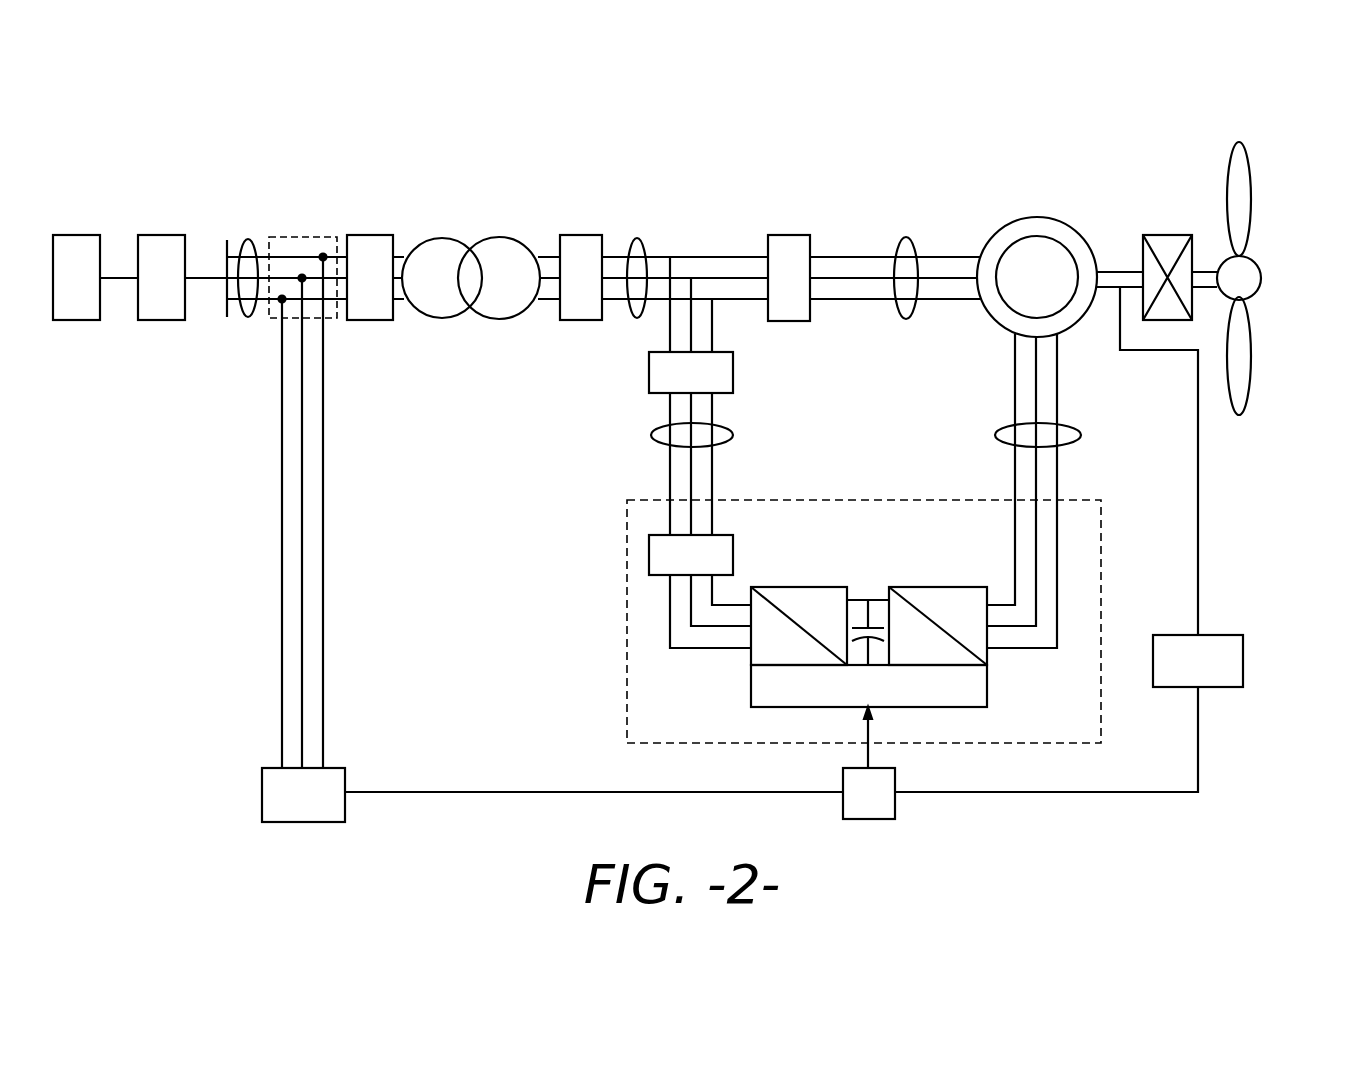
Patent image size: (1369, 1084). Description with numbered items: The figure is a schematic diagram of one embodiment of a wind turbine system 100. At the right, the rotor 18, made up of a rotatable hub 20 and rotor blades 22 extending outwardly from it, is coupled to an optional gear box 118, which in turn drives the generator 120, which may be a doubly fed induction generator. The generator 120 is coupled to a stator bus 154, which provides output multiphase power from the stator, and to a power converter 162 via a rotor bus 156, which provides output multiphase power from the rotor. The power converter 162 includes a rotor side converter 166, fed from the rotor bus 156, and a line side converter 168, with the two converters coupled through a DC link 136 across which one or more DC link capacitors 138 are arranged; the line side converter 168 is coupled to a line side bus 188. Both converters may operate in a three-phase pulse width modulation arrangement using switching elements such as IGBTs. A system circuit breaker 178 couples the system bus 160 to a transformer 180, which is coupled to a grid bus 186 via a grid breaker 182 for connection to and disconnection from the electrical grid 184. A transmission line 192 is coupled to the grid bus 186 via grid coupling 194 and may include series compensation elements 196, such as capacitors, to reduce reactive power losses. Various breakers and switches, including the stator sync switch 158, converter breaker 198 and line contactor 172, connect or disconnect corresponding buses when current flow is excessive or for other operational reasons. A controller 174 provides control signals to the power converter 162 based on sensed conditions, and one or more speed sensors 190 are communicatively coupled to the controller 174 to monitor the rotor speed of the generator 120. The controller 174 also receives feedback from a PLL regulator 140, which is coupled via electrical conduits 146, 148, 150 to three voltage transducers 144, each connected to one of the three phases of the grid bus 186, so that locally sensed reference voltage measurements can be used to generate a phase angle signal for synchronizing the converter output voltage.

The rotor 18 is at (1280, 172).
The hub 20 is at (1262, 276).
The rotor blade 22 is at (1250, 213).
The wind turbine system 100 is at (428, 158).
The gear box 118 is at (1170, 235).
The generator 120 is at (1035, 217).
The DC link 136 is at (877, 598).
The DC link capacitor 138 is at (855, 625).
The PLL regulator 140 is at (283, 807).
The voltage transducer 144 is at (312, 237).
The electrical conduit 146 is at (282, 590).
The electrical conduit 148 is at (303, 543).
The electrical conduit 150 is at (325, 497).
The stator bus 154 is at (906, 238).
The rotor bus 156 is at (1080, 435).
The stator sync switch 158 is at (788, 235).
The system bus 160 is at (640, 240).
The power converter 162 is at (1101, 592).
The rotor side converter 166 is at (990, 655).
The line side converter 168 is at (751, 657).
The line contactor 172 is at (649, 558).
The controller 174 is at (895, 805).
The system circuit breaker 178 is at (580, 235).
The transformer 180 is at (497, 238).
The grid breaker 182 is at (366, 235).
The electrical grid 184 is at (76, 235).
The grid bus 186 is at (248, 240).
The line side bus 188 is at (652, 443).
The speed sensor 190 is at (1178, 675).
The transmission line 192 is at (118, 282).
The grid coupling 194 is at (227, 255).
The series compensation element 196 is at (158, 235).
The converter breaker 198 is at (649, 378).